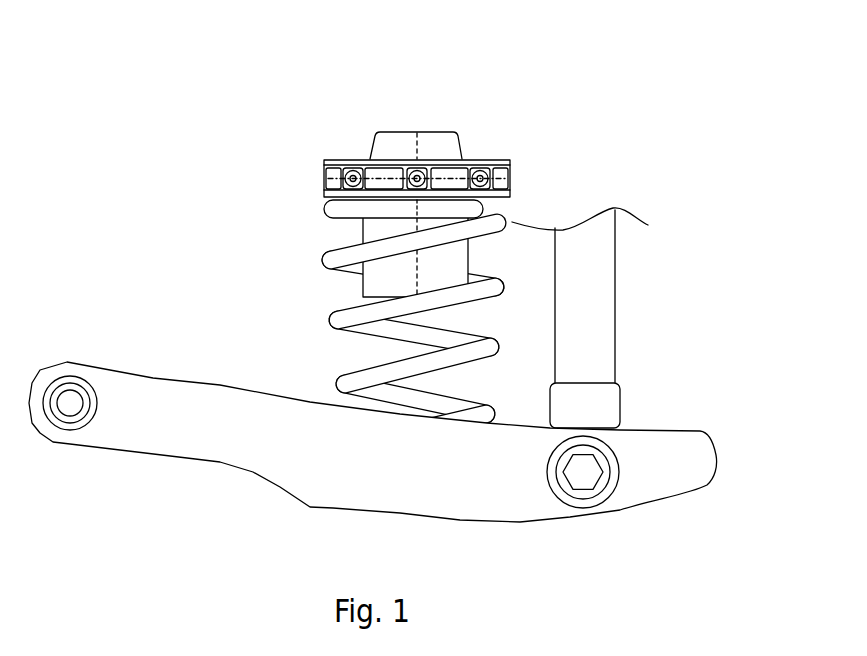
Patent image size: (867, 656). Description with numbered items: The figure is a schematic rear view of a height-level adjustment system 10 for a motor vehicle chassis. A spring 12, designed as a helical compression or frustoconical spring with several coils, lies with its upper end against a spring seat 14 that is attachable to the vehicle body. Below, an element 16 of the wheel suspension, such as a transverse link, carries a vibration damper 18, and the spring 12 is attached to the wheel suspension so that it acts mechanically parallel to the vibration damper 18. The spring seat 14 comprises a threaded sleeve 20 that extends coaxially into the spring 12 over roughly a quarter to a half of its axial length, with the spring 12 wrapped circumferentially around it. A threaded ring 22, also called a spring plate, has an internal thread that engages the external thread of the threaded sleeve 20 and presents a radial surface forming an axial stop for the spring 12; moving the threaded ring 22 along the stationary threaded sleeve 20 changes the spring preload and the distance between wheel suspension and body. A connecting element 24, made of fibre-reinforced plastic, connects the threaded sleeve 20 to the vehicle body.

The height-level adjustment system 10 is at (226, 201).
The spring 12 is at (508, 223).
The spring seat 14 is at (357, 128).
The element of the wheel suspension 16 is at (663, 462).
The vibration damper 18 is at (583, 318).
The threaded sleeve 20 is at (383, 277).
The threaded ring 22 is at (487, 158).
The connecting element 24 is at (393, 143).